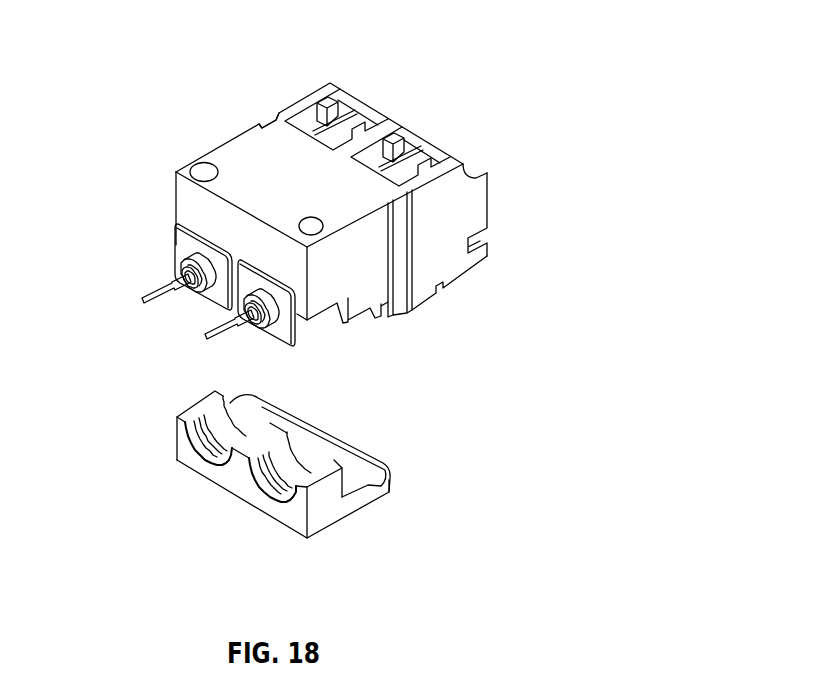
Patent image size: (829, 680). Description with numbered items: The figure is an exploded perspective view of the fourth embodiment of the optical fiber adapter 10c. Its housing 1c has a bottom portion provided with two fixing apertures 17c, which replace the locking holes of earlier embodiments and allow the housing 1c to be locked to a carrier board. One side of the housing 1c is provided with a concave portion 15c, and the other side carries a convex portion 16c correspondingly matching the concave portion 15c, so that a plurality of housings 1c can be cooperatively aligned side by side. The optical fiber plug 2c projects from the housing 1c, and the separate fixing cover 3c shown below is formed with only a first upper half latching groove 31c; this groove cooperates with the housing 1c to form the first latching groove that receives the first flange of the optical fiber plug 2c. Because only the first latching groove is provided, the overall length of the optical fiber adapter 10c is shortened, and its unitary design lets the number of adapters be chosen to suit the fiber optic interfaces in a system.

The optical fiber adapter 10c is at (483, 61).
The housing 1c is at (233, 148).
The optical fiber plug 2c is at (175, 262).
The fixing cover 3c is at (322, 518).
The concave portion 15c is at (272, 118).
The convex portion 16c is at (413, 313).
The fixing apertures 17c is at (210, 174).
The first upper half latching groove 31c is at (187, 412).